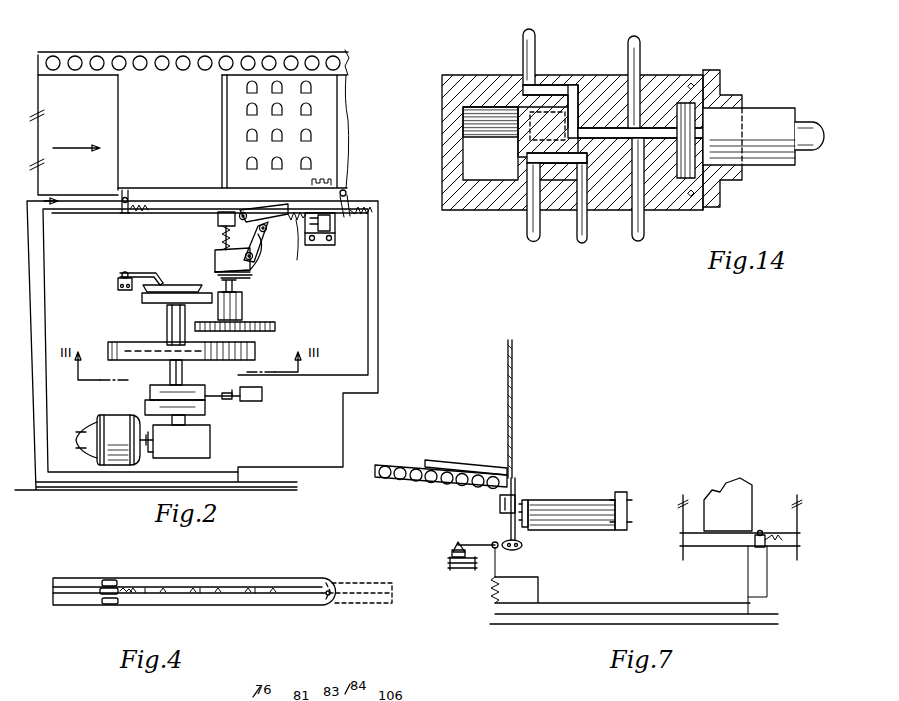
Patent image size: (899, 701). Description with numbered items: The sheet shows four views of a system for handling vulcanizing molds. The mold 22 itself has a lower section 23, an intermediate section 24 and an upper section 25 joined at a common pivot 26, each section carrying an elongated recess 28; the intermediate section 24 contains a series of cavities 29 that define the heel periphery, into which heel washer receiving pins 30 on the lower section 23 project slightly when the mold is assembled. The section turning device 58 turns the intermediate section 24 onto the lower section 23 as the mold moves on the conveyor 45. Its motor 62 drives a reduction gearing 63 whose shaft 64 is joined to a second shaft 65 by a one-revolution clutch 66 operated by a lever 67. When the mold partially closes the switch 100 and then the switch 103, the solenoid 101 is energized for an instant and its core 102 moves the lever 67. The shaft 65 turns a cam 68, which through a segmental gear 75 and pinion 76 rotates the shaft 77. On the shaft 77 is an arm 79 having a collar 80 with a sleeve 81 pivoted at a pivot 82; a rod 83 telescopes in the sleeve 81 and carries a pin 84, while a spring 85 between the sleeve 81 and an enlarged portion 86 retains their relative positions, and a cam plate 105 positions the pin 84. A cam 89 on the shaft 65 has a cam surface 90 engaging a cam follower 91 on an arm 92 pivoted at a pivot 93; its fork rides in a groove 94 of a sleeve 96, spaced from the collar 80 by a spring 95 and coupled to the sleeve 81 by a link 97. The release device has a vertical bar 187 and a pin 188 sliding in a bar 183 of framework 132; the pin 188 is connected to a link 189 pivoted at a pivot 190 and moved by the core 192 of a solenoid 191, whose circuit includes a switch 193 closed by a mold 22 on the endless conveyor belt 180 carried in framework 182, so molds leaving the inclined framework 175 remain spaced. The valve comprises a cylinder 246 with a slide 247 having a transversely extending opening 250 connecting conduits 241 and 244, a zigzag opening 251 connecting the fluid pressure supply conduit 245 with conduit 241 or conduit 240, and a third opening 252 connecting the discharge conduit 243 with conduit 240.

In FIG. 2, the lower section 23 is at (147, 78).
In FIG. 4, the lower section 23 is at (265, 598).
In FIG. 2, the common pivot 26 is at (232, 78).
In FIG. 4, the common pivot 26 is at (330, 603).
In FIG. 2, the intermediate section 24 is at (331, 118).
In FIG. 4, the intermediate section 24 is at (306, 604).
In FIG. 2, the elongated recess 28 is at (328, 177).
In FIG. 4, the elongated recess 28 is at (112, 579).
In FIG. 2, the normally open switch 103 is at (346, 190).
In FIG. 2, the conveyor 45 is at (174, 212).
In FIG. 2, the normally open electrical switch 100 is at (135, 200).
In FIG. 2, the section turning device 58 is at (374, 314).
In FIG. 2, the arm 79 is at (217, 215).
In FIG. 2, the collar 80 is at (222, 228).
In FIG. 2, the pivot 82 is at (222, 243).
In FIG. 2, the spring 95 is at (215, 258).
In FIG. 2, the sleeve 81 is at (272, 218).
In FIG. 2, the rod 83 is at (286, 228).
In FIG. 2, the spring 85 is at (296, 241).
In FIG. 2, the groove 94 is at (249, 260).
In FIG. 2, the link 97 is at (266, 236).
In FIG. 2, the sleeve 96 is at (252, 278).
In FIG. 2, the shaft 77 is at (236, 288).
In FIG. 2, the enlarged portion 86 is at (334, 224).
In FIG. 2, the pin 84 is at (315, 240).
In FIG. 2, the cam plate 105 is at (332, 241).
In FIG. 2, the arm 92 is at (138, 272).
In FIG. 2, the cam follower 91 is at (162, 276).
In FIG. 2, the pivot 93 is at (117, 278).
In FIG. 2, the cam surface 90 is at (182, 289).
In FIG. 2, the cam 89 is at (145, 300).
In FIG. 2, the second shaft 65 is at (168, 312).
In FIG. 2, the pinion 76 is at (245, 318).
In FIG. 2, the segmental gear 75 is at (275, 327).
In FIG. 2, the cam 68 is at (255, 352).
In FIG. 2, the one-revolution clutch 66 is at (205, 402).
In FIG. 2, the lever 67 is at (208, 395).
In FIG. 2, the shaft 64 is at (186, 418).
In FIG. 2, the solenoid 101 is at (246, 402).
In FIG. 2, the core 102 is at (233, 390).
In FIG. 2, the motor 62 is at (113, 420).
In FIG. 2, the reduction gearing 63 is at (198, 450).
In FIG. 14, the cylinder 246 is at (567, 75).
In FIG. 14, the third opening 252 is at (518, 158).
In FIG. 14, the zigzag opening 251 is at (605, 115).
In FIG. 14, the fluid pressure supply conduit 245 is at (537, 48).
In FIG. 14, the slide 247 is at (667, 105).
In FIG. 14, the discharge conduit 244 is at (640, 42).
In FIG. 14, the conduit 241 is at (648, 230).
In FIG. 14, the conduit 240 is at (578, 232).
In FIG. 14, the discharge conduit 243 is at (528, 228).
In FIG. 14, the transversely extending opening 250 is at (722, 95).
In FIG. 7, the vertical bar 187 is at (508, 452).
In FIG. 7, the inclined framework 175 is at (393, 467).
In FIG. 7, the mold 22 is at (437, 462).
In FIG. 7, the pin 188 is at (515, 488).
In FIG. 7, the bar 183 is at (500, 503).
In FIG. 7, the framework 182 is at (527, 500).
In FIG. 7, the endless conveyor belt 180 is at (590, 500).
In FIG. 7, the pivot 190 is at (458, 542).
In FIG. 7, the link 189 is at (506, 549).
In FIG. 7, the framework 132 is at (455, 569).
In FIG. 7, the core 192 is at (492, 582).
In FIG. 7, the solenoid 191 is at (492, 603).
In FIG. 7, the switch 193 is at (765, 548).
In FIG. 4, the upper section 25 is at (281, 578).
In FIG. 4, the heel washer receiving pins 30 is at (128, 598).
In FIG. 4, the cavities 29 is at (252, 598).